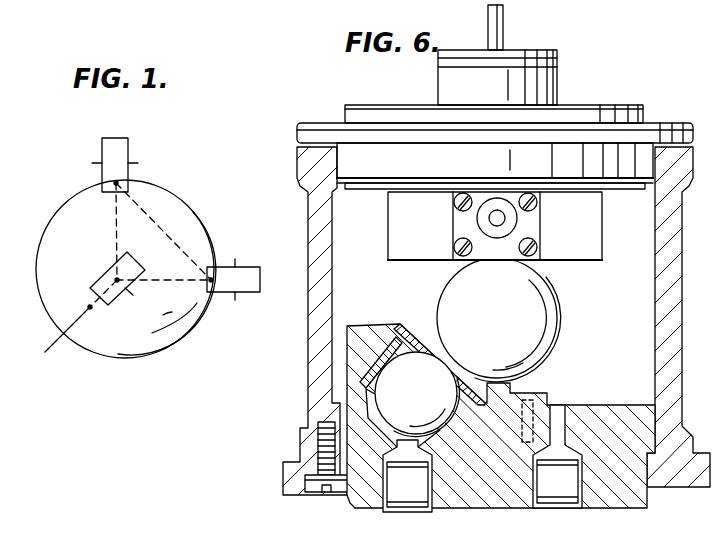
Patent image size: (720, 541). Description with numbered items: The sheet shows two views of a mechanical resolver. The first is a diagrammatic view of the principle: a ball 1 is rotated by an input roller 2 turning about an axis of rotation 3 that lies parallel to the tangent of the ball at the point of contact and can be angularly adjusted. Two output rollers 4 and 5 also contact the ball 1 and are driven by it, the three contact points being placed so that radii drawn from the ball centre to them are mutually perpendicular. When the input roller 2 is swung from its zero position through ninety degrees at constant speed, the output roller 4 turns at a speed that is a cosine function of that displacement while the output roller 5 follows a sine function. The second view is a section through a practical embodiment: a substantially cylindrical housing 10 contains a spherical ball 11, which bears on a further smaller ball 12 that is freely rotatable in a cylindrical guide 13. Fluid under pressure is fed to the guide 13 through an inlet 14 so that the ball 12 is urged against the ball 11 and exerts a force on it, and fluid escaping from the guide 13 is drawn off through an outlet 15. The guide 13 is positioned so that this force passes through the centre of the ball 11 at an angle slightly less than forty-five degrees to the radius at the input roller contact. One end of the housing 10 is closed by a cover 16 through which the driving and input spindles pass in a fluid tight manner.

In FIG. 1, the ball 1 is at (110, 352).
In FIG. 1, the input roller 2 is at (110, 267).
In FIG. 1, the axis of rotation 3 is at (105, 267).
In FIG. 1, the output roller 4 is at (118, 148).
In FIG. 1, the output roller 5 is at (248, 268).
In FIG. 6, the housing 10 is at (325, 233).
In FIG. 6, the spherical ball 11 is at (507, 308).
In FIG. 6, the smaller ball 12 is at (427, 395).
In FIG. 6, the cylindrical guide 13 is at (478, 412).
In FIG. 6, the inlet 14 is at (407, 500).
In FIG. 6, the outlet 15 is at (545, 507).
In FIG. 6, the cover 16 is at (668, 123).